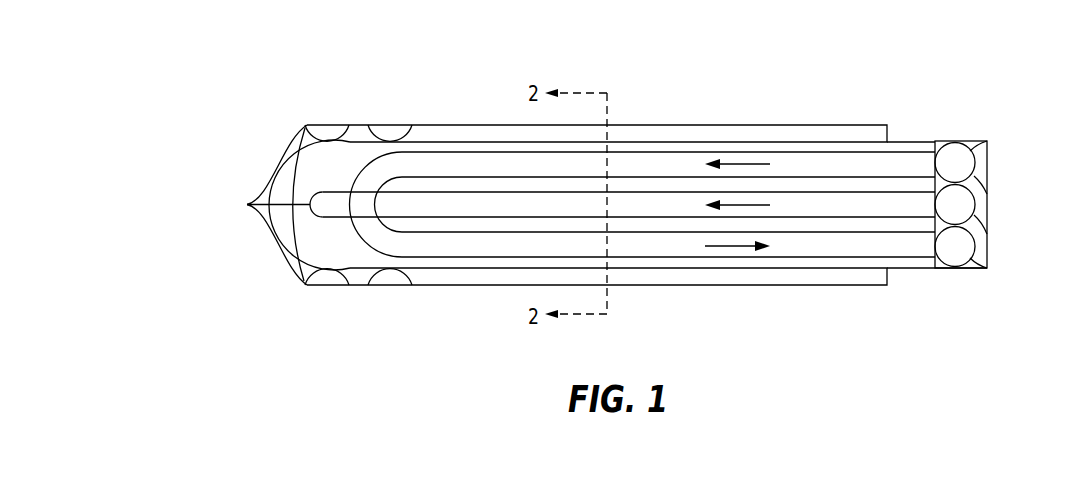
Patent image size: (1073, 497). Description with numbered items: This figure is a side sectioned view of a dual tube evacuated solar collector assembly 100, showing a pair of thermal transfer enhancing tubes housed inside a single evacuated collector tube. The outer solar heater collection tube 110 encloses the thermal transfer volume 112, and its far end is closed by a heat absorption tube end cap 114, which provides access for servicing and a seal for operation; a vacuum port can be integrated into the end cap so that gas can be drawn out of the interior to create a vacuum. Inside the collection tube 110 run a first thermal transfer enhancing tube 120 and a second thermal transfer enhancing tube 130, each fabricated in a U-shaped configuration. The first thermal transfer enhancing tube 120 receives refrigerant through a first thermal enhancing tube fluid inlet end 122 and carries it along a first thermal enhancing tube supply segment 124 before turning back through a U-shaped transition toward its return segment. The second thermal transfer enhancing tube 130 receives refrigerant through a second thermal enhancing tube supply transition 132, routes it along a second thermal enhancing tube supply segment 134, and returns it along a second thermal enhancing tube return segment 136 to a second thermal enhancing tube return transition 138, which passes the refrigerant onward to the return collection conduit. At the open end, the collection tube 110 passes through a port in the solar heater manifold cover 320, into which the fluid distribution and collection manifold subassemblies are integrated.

The dual tube evacuated solar collector assembly 100 is at (210, 106).
The solar heater collection tube 110 is at (750, 275).
The thermal transfer volume 112 is at (437, 263).
The heat absorption tube end cap 114 is at (270, 230).
The first thermal transfer enhancing tube 120 is at (310, 228).
The first thermal enhancing tube fluid inlet end 122 is at (973, 208).
The first thermal enhancing tube supply segment 124 is at (787, 205).
The second thermal transfer enhancing tube 130 is at (354, 152).
The second thermal enhancing tube supply transition 132 is at (984, 140).
The second thermal enhancing tube supply segment 134 is at (790, 163).
The second thermal enhancing tube return segment 136 is at (638, 244).
The second thermal enhancing tube return transition 138 is at (985, 268).
The solar heater manifold cover 320 is at (988, 182).